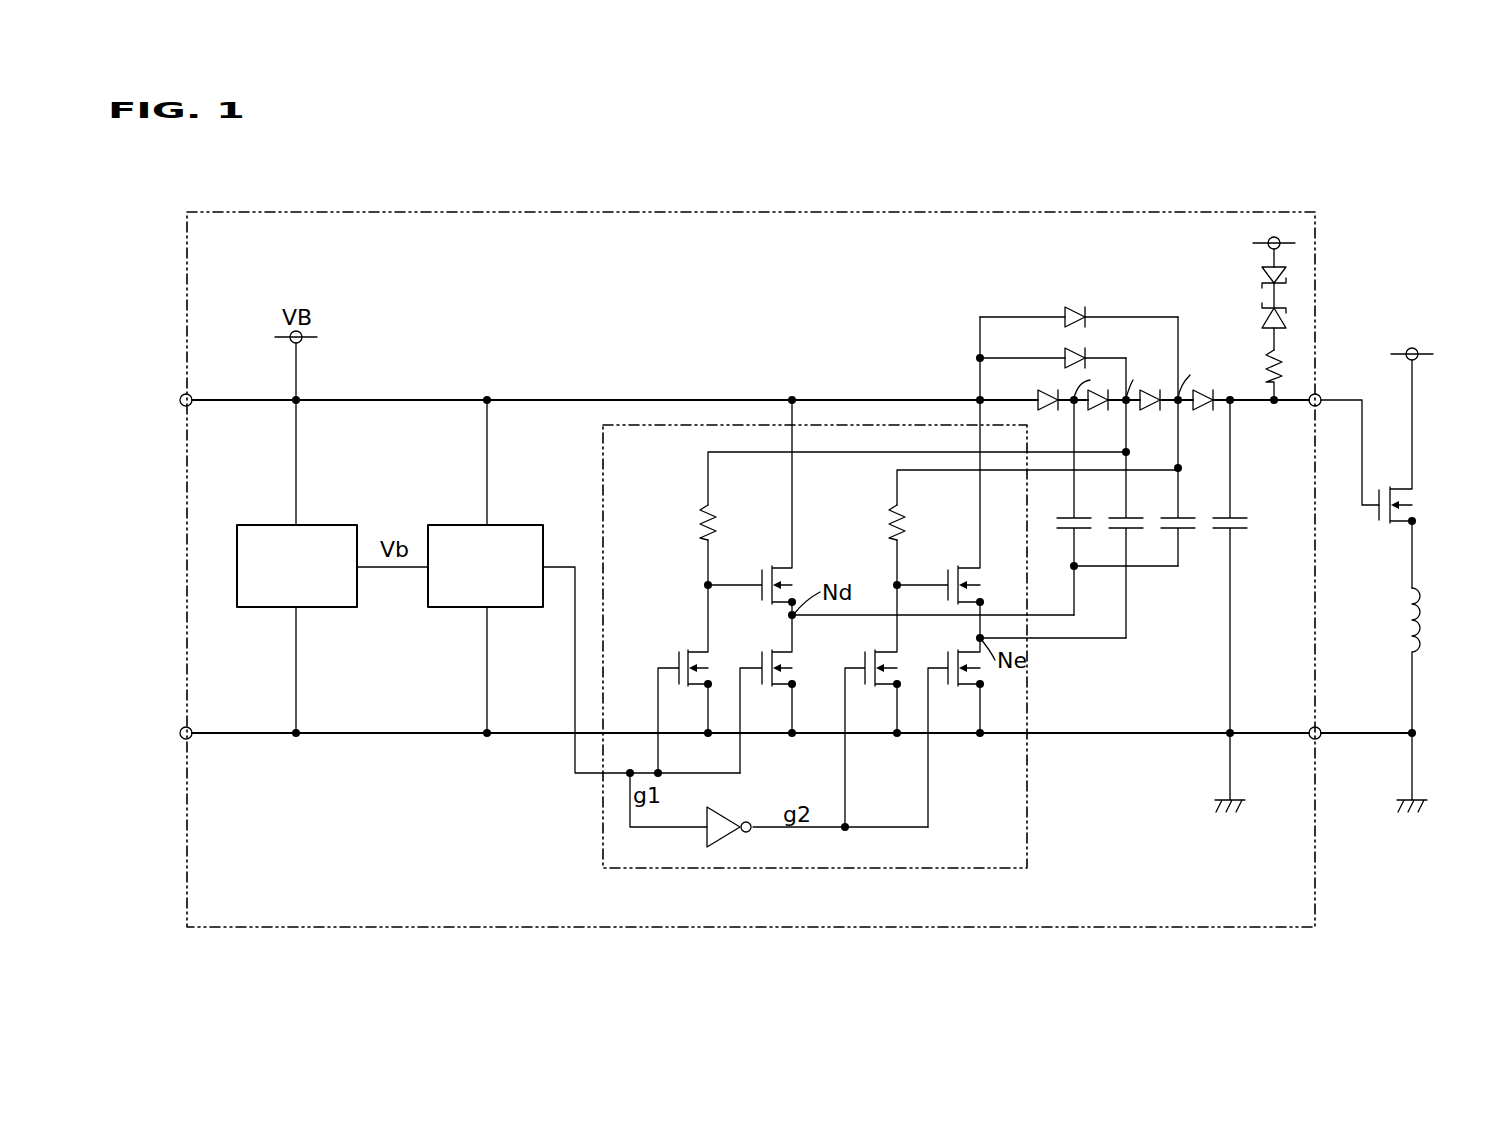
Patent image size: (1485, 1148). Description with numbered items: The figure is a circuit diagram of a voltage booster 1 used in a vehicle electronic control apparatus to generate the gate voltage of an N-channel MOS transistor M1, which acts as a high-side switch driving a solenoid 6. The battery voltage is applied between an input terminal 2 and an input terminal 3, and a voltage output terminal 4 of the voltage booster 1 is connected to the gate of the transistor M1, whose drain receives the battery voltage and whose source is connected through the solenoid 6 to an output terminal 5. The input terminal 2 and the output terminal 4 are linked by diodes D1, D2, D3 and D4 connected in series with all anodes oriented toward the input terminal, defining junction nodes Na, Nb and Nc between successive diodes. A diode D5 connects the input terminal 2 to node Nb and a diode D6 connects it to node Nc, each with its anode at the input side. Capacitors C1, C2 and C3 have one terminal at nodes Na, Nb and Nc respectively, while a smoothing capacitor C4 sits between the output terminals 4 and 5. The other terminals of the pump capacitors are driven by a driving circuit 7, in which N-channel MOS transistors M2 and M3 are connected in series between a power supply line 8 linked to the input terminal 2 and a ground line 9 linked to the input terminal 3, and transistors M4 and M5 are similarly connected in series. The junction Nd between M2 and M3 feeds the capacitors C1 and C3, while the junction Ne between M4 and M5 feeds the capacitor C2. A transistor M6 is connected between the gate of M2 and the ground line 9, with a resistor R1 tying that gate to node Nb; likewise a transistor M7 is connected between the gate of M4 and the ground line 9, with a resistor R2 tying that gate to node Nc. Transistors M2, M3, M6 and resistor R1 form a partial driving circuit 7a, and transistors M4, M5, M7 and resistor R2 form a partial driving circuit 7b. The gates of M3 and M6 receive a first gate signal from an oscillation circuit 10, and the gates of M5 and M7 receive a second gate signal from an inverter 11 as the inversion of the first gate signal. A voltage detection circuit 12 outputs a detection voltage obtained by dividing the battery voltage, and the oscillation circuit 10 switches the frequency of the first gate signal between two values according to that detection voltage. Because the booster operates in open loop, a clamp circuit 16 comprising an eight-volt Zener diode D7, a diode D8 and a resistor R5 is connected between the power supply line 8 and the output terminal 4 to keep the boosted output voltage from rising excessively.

The voltage booster 1 is at (877, 212).
The input terminal 2 is at (184, 394).
The input terminal 3 is at (184, 727).
The voltage output terminal 4 is at (1320, 394).
The output terminal 5 is at (1320, 727).
The solenoid 6 is at (1425, 620).
The driving circuit 7 is at (600, 462).
The partial driving circuit 7a is at (884, 586).
The partial driving circuit 7b is at (996, 572).
The power supply line 8 is at (538, 400).
The power supply line (ground line) 9 is at (533, 733).
The oscillation circuit 10 is at (505, 525).
The inverter 11 is at (736, 812).
The voltage detection circuit 12 is at (318, 525).
The clamp circuit 16 is at (1203, 294).
The resistor R1 is at (706, 512).
The resistor R2 is at (893, 512).
The resistor R5 is at (1264, 368).
The N-channel MOS transistor M1 is at (1400, 492).
The N-channel MOS transistor M2 is at (762, 570).
The N-channel MOS transistor M3 is at (762, 651).
The N-channel MOS transistor M4 is at (948, 570).
The N-channel MOS transistor M5 is at (948, 662).
The N-channel MOS transistor M6 is at (678, 650).
The N-channel MOS transistor M7 is at (865, 662).
The diode D1 is at (1050, 410).
The diode D2 is at (1100, 410).
The diode D3 is at (1152, 410).
The diode D4 is at (1205, 410).
The diode D5 is at (1088, 357).
The diode D6 is at (1088, 316).
The Zener diode D7 is at (1262, 278).
The diode D8 is at (1262, 318).
The capacitor C1 is at (1058, 529).
The capacitor C2 is at (1110, 529).
The capacitor C3 is at (1162, 529).
The smoothing capacitor C4 is at (1214, 529).